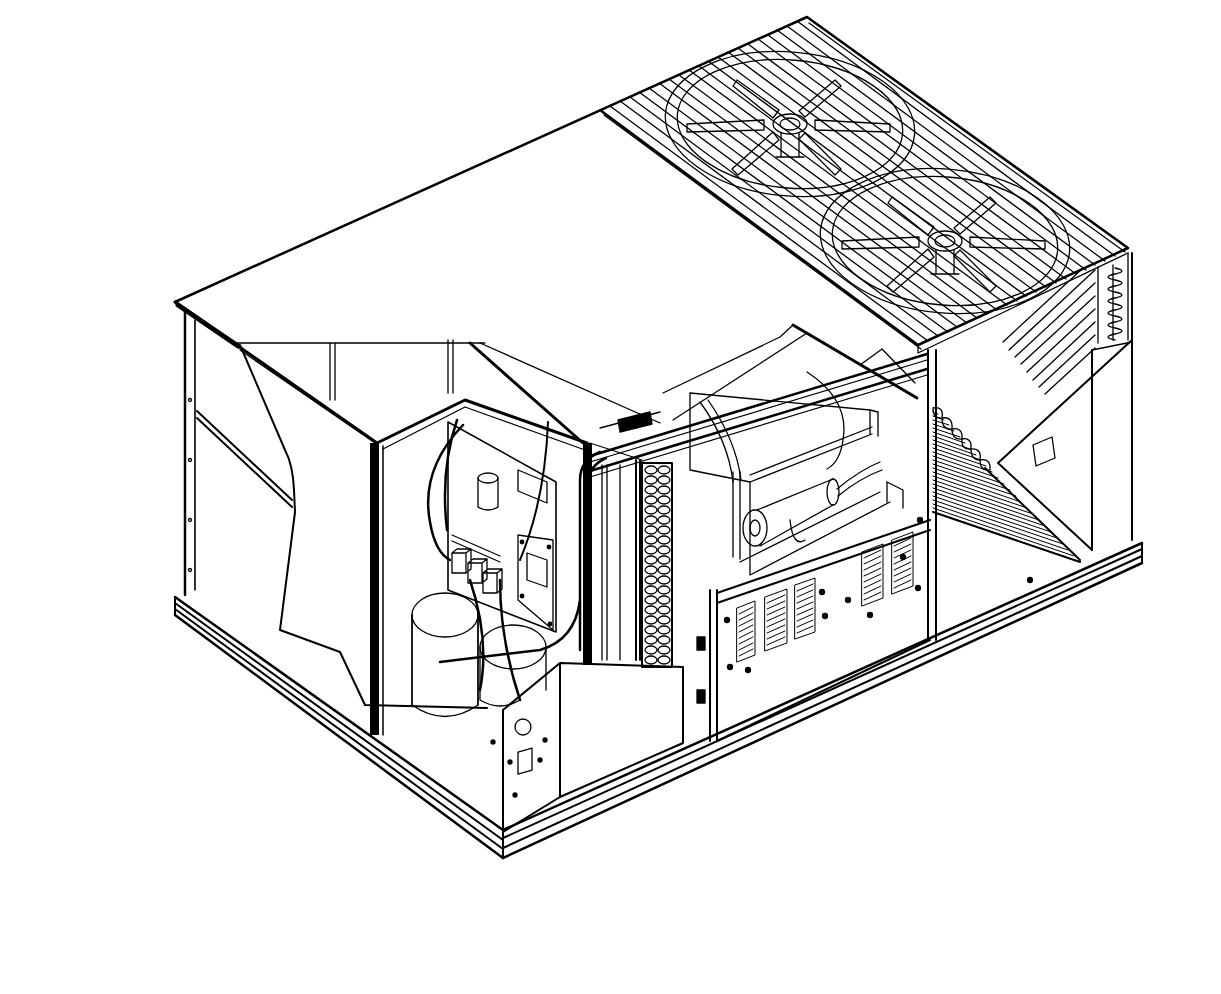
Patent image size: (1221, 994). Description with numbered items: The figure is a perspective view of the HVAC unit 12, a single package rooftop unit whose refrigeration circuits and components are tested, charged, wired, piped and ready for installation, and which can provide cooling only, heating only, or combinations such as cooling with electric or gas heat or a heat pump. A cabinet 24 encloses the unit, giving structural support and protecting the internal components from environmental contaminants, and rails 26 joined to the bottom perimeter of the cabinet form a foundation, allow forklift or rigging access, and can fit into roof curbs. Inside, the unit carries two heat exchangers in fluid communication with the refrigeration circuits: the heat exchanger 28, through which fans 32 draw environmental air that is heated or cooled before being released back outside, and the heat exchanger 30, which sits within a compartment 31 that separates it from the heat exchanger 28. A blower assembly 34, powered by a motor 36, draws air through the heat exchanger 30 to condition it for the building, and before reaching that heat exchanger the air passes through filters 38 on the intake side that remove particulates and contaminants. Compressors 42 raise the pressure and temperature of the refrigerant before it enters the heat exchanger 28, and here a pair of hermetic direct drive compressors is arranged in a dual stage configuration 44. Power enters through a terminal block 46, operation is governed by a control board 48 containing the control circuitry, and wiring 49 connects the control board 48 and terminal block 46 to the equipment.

The HVAC unit 12 is at (382, 158).
The cabinet 24 is at (225, 557).
The rails 26 is at (248, 672).
The heat exchanger 28 is at (1110, 287).
The heat exchanger 30 is at (662, 667).
The compartment 31 is at (703, 467).
The fans 32 is at (953, 187).
The blower assembly 34 is at (837, 467).
The motor 36 is at (800, 497).
The filters 38 is at (618, 475).
The compressors 42 is at (417, 668).
The dual stage configuration 44 is at (413, 603).
The terminal block 46 is at (472, 540).
The control board 48 is at (537, 472).
The wiring 49 is at (637, 417).